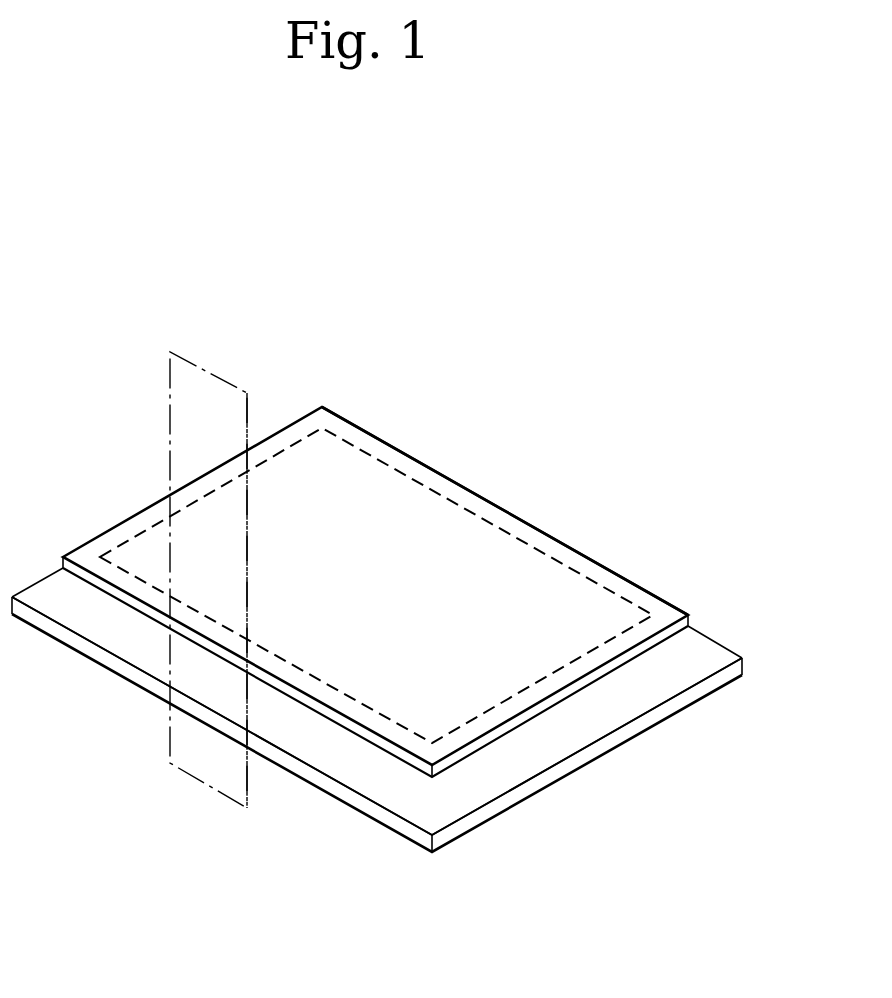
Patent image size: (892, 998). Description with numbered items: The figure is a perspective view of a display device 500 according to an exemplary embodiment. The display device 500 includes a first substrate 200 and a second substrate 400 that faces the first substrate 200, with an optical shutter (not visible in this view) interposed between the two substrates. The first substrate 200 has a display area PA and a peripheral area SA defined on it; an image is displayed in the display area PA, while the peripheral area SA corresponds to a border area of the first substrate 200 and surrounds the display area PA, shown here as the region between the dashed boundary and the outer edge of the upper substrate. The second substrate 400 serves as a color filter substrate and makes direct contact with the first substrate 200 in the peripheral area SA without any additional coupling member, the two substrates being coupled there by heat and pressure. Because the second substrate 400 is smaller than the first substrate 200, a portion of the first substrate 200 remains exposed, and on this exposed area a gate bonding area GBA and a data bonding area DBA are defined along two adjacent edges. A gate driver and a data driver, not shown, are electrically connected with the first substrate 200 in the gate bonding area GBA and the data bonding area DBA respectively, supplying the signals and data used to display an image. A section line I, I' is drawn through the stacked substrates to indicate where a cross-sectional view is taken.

The display device 500 is at (397, 595).
The first substrate 200 is at (690, 697).
The second substrate 400 is at (573, 697).
The peripheral area SA is at (418, 472).
The display area PA is at (478, 517).
The gate bonding area GBA is at (483, 775).
The data bonding area DBA is at (378, 778).
The section line I is at (165, 590).
The section line I' is at (197, 632).